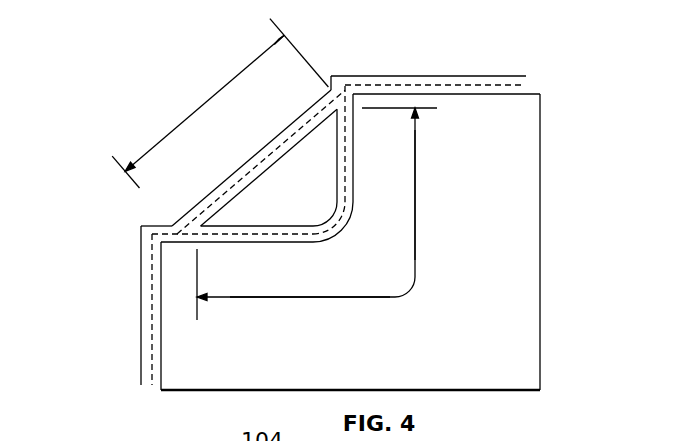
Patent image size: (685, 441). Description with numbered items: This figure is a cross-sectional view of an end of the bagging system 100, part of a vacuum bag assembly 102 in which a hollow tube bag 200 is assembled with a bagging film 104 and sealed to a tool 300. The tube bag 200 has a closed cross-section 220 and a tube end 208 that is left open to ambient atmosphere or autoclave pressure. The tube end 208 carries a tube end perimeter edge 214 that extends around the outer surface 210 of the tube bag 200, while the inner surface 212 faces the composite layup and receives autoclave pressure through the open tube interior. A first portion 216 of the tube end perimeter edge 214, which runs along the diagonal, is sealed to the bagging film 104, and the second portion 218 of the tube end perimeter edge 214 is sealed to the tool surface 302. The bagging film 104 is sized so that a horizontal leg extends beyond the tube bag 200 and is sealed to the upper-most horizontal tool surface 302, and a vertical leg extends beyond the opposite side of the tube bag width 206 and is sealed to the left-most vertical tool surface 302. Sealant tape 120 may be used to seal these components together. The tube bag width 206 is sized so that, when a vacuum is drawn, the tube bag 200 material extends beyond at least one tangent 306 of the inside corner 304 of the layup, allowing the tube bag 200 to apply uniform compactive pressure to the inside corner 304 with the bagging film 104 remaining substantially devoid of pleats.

The bagging system 100 is at (337, 200).
The vacuum bag assembly 102 is at (377, 75).
The bagging film 104 is at (141, 250).
The sealant tape 120 is at (343, 228).
The tube bag 200 is at (242, 190).
The tube bag width 206 is at (418, 268).
The tube end 208 is at (348, 126).
The outer surface 210 is at (252, 163).
The inner surface 212 is at (305, 145).
The tube end perimeter edge 214 is at (226, 228).
The first portion of the tube end perimeter edge 216 is at (398, 298).
The second portion of the tube end perimeter edge 218 is at (205, 102).
The closed cross-section 220 is at (340, 155).
The tool 300 is at (401, 242).
The tool surface 302 is at (507, 96).
The inside corner 304 is at (337, 226).
The tangent 306 is at (355, 209).